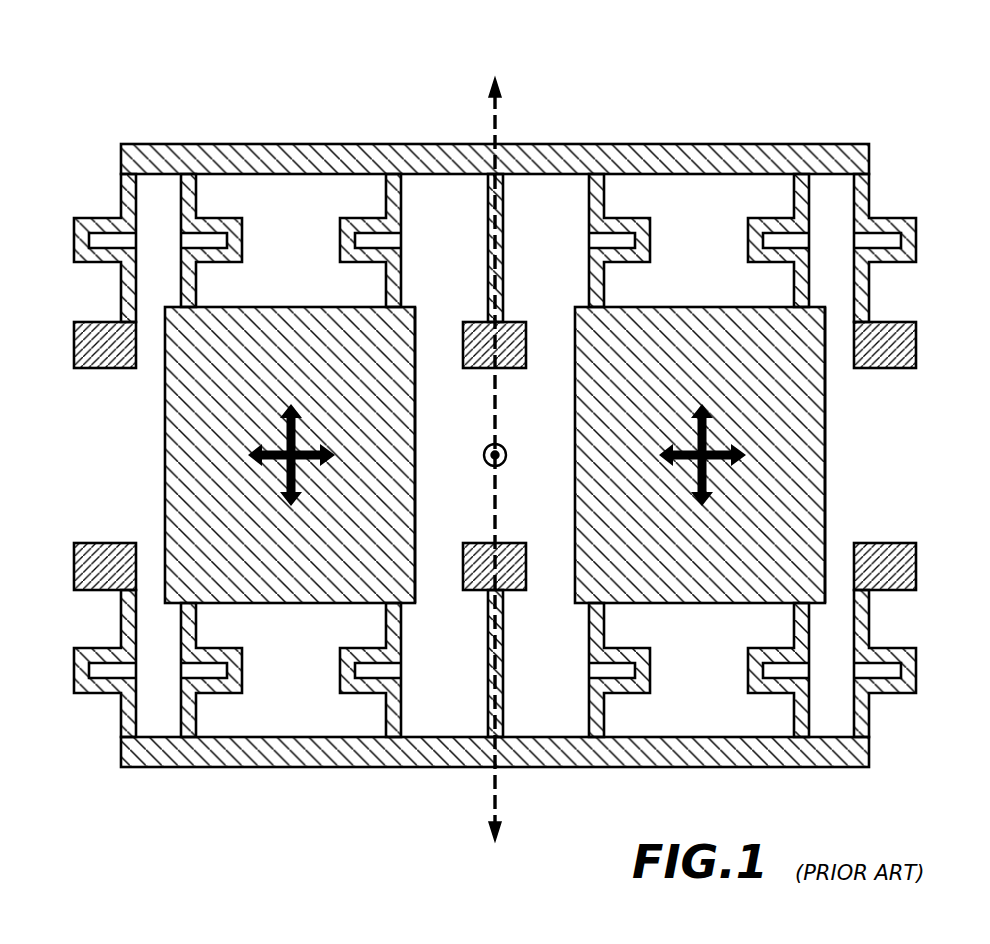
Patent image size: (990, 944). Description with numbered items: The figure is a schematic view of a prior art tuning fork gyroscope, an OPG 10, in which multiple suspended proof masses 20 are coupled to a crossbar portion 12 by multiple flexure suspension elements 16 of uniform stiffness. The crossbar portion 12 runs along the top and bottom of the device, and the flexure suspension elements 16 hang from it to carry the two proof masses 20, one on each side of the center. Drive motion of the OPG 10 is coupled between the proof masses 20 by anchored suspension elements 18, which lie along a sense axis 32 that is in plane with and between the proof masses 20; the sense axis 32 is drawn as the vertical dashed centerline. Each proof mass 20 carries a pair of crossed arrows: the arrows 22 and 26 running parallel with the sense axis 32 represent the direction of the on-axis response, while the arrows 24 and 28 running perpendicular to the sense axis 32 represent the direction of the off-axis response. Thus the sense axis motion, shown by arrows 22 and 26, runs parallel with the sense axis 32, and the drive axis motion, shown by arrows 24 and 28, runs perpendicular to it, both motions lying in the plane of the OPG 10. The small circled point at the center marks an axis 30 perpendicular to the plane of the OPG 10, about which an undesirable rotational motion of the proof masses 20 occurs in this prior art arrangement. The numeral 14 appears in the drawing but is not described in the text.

The OPG 10 is at (918, 92).
The crossbar portion 12 is at (870, 158).
The proof mass 14 is at (414, 307).
The flexure suspension elements 16 is at (340, 223).
The anchored suspension elements 18 is at (503, 248).
The suspended proof masses 20 is at (415, 455).
The arrow 22 is at (282, 406).
The arrow 24 is at (252, 447).
The arrow 26 is at (708, 409).
The arrow 28 is at (742, 448).
The axis 30 is at (505, 447).
The sense axis 32 is at (498, 127).